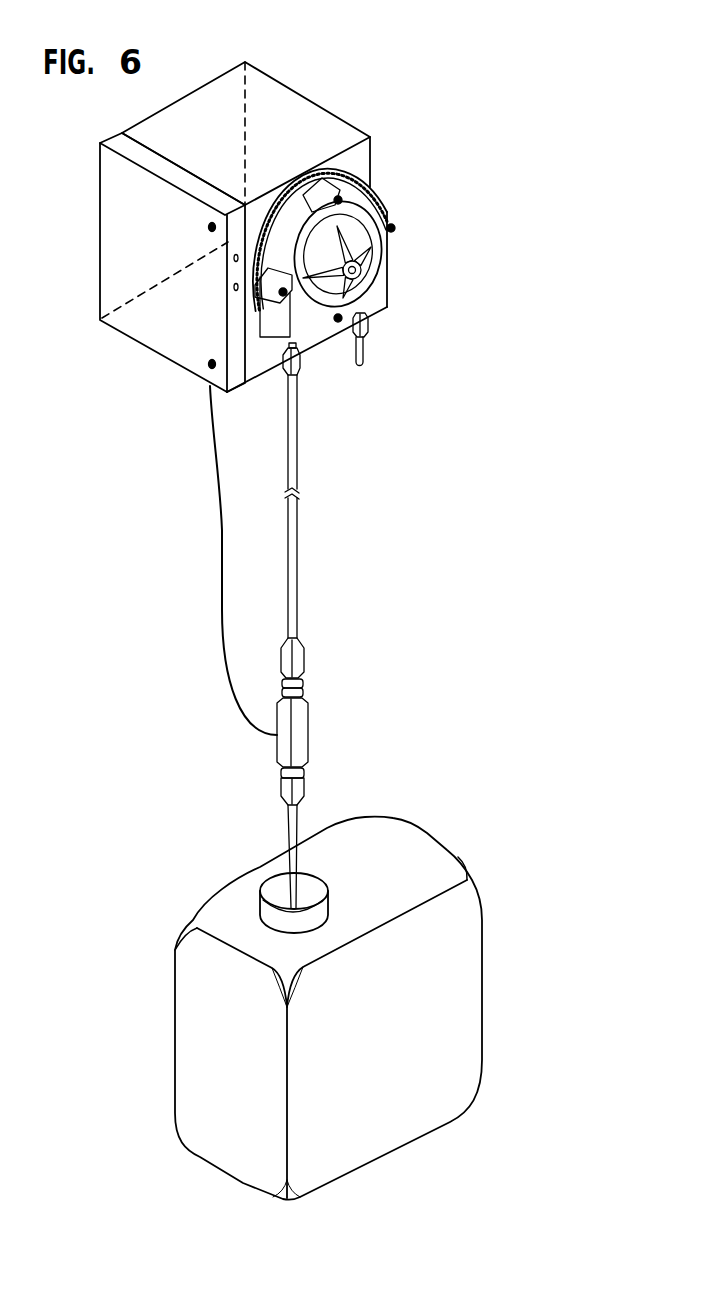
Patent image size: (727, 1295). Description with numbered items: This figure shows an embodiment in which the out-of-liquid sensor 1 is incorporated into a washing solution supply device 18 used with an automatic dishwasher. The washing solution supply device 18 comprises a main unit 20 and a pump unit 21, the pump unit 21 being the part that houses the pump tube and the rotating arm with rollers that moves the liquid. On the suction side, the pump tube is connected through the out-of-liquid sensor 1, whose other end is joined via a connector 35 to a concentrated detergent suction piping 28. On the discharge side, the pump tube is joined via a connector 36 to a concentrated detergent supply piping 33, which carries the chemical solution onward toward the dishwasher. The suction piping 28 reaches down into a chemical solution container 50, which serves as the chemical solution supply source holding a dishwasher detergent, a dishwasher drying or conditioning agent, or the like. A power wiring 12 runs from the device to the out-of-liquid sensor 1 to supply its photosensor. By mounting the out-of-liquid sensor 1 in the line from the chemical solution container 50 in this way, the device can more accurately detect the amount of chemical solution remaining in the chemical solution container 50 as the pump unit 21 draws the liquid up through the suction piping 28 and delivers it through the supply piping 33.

The washing solution supply device 18 is at (298, 74).
The main unit 20 is at (376, 187).
The pump unit 21 is at (386, 214).
The connector 36 is at (372, 320).
The concentrated detergent supply piping 33 is at (368, 352).
The connector 35 is at (284, 362).
The concentrated detergent suction piping 28 is at (298, 452).
The power wiring 12 is at (222, 545).
The out-of-liquid sensor 1 is at (312, 727).
The chemical solution container 50 is at (467, 983).